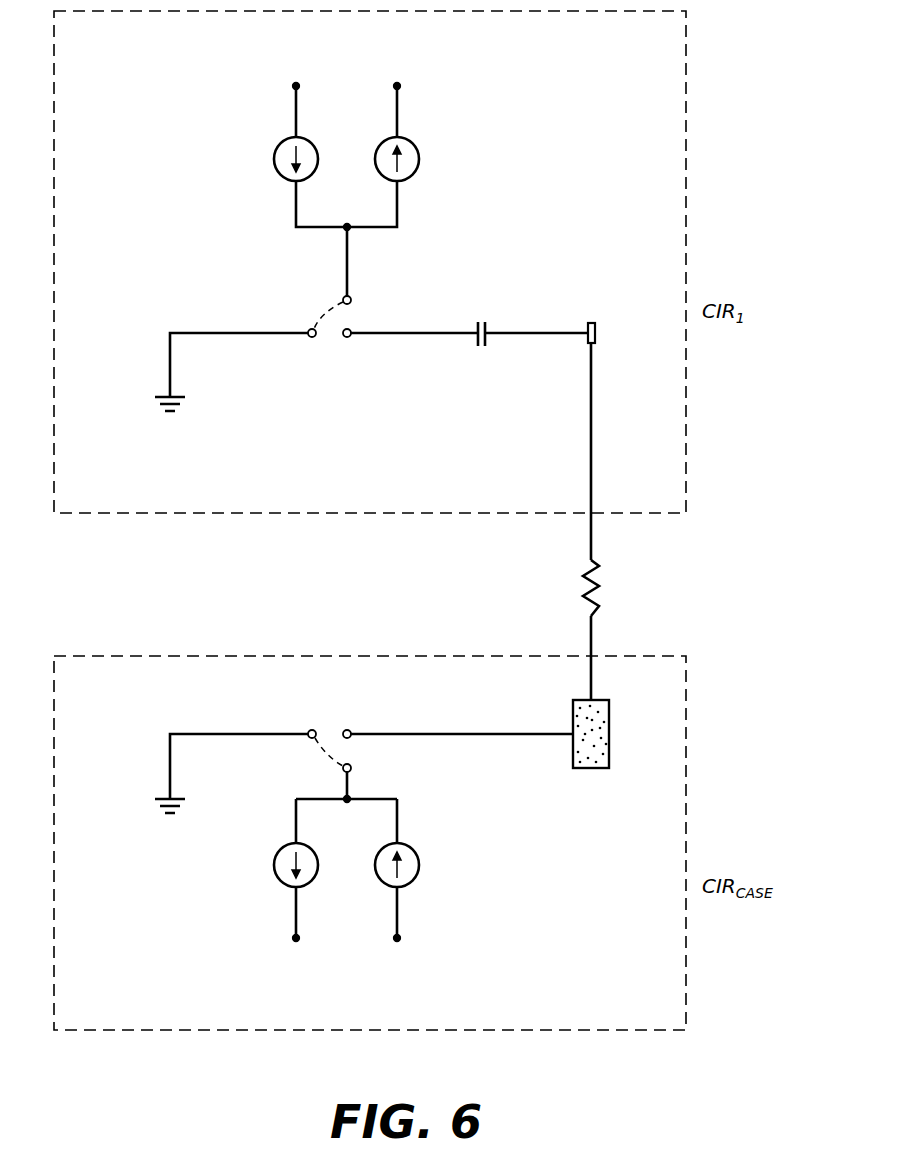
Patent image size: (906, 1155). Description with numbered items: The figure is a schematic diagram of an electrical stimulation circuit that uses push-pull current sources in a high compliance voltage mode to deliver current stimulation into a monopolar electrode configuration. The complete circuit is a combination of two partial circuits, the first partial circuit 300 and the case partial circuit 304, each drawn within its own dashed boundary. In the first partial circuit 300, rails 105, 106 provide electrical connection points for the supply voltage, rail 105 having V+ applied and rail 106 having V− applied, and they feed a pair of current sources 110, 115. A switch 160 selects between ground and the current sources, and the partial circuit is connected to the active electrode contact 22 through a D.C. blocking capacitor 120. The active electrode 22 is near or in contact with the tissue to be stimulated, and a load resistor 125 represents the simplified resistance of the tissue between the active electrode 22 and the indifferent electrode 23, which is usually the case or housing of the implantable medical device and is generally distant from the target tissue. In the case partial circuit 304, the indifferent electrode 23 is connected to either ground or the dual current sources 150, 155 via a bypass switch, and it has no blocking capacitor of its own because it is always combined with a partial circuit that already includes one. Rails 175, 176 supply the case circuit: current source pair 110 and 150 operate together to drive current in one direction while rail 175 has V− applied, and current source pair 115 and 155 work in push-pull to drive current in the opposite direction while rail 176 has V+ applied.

The first circuit CIR1 300 is at (686, 182).
The case circuit CIRCASE 304 is at (686, 755).
The rail 105 is at (296, 86).
The rail 106 is at (397, 86).
The current source 110 is at (282, 142).
The current source 115 is at (412, 142).
The switch 160 is at (350, 316).
The D.C. blocking capacitor 120 is at (490, 328).
The electrode 22 is at (596, 335).
The load resistor 125 is at (690, 536).
The indifferent electrode 23 is at (582, 770).
The current source 150 is at (282, 850).
The current source 155 is at (412, 852).
The rail 175 is at (296, 940).
The rail 176 is at (397, 940).